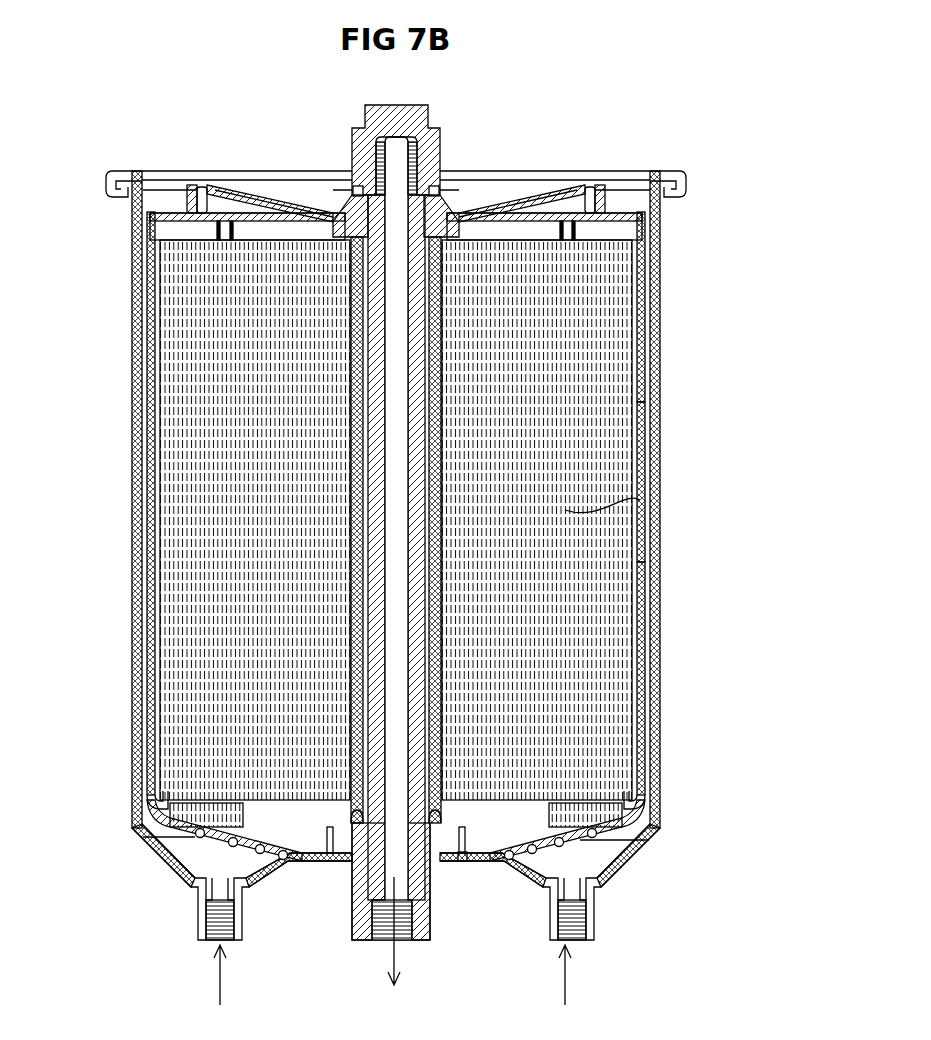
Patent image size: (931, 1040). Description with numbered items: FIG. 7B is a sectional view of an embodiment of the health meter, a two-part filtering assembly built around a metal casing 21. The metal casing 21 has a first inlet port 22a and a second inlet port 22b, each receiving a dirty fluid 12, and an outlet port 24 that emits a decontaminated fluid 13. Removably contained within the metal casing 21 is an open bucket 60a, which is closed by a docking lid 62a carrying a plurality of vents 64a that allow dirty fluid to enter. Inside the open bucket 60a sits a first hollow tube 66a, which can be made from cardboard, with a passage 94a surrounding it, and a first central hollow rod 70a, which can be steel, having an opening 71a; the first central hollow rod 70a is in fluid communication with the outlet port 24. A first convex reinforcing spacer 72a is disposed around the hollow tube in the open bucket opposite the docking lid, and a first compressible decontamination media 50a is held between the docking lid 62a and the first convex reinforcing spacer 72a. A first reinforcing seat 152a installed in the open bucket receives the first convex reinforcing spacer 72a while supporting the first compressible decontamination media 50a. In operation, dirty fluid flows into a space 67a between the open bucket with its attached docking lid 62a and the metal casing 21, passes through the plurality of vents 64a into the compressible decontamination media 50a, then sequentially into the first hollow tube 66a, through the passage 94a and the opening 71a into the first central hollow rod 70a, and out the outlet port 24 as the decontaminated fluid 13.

The dirty fluid 12 is at (215, 986).
The decontaminated fluid 13 is at (388, 942).
The metal casing 21 is at (661, 277).
The first inlet port 22a is at (590, 936).
The second inlet port 22b is at (198, 936).
The outlet port 24 is at (352, 905).
The first compressible decontamination media 50a is at (588, 605).
The open bucket 60a is at (645, 668).
The docking lid 62a is at (590, 184).
The plurality of vents 64a is at (548, 203).
The first hollow tube 66a is at (640, 500).
The space 67a is at (645, 474).
The first central hollow rod 70a is at (375, 614).
The opening 71a is at (565, 318).
The first convex reinforcing spacer 72a is at (160, 827).
The passage 94a is at (472, 815).
The first reinforcing seat 152a is at (645, 770).